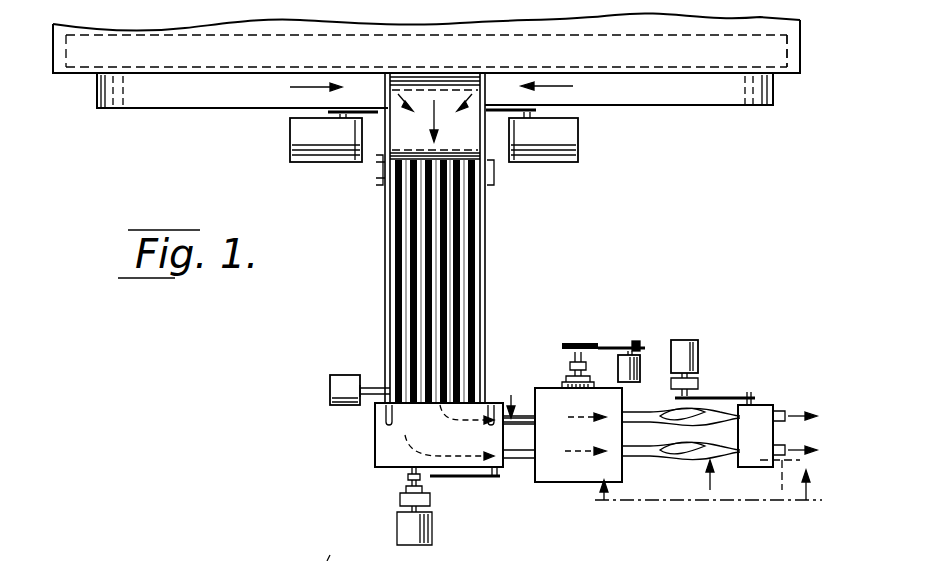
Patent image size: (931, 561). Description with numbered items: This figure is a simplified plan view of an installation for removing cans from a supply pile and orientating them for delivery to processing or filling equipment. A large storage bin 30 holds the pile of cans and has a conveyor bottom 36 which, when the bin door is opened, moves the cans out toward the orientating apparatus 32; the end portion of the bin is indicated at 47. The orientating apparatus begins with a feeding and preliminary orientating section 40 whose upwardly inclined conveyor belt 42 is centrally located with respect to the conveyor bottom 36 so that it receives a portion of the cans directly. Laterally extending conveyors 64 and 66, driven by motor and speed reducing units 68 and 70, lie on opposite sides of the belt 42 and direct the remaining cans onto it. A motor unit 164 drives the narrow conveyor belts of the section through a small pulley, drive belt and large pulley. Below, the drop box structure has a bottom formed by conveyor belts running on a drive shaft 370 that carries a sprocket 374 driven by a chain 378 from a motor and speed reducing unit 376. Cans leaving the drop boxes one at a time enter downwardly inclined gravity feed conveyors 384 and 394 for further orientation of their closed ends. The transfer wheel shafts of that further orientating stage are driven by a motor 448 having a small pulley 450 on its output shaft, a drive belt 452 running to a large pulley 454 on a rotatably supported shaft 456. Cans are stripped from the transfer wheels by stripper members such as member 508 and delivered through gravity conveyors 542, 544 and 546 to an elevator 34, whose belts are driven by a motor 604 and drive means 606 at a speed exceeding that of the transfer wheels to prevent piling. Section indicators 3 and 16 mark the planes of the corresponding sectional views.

The storage bin 30 is at (78, 80).
The platen end portion 47 is at (766, 22).
The conveyor bottom 36 is at (270, 50).
The laterally extending conveyor 64 is at (186, 98).
The laterally extending conveyor 66 is at (677, 96).
The motor and speed reducing unit 68 is at (304, 147).
The motor and speed reducing unit 70 is at (550, 150).
The upwardly inclined conveyor belt 42 is at (470, 135).
The feeding and preliminary orientating section 40 is at (380, 283).
The motor unit 164 is at (332, 382).
The orientating apparatus 32 is at (360, 432).
The drive shaft 370 is at (519, 478).
The sprocket 374 is at (484, 478).
The chain 378 is at (408, 477).
The motor and speed reducing unit 376 is at (398, 525).
The gravity feed conveyor 384 is at (520, 462).
The gravity feed conveyor 394 is at (511, 395).
The gravity conveyor 542 is at (636, 467).
The gravity conveyor 546 is at (648, 422).
The gravity conveyor 544 is at (720, 422).
The elevator 34 is at (772, 403).
The stripper member 508 is at (735, 458).
The large pulley 454 is at (575, 344).
The drive belt 452 is at (608, 346).
The small pulley 450 is at (640, 346).
The shaft 456 is at (568, 374).
The motor 448 is at (641, 368).
The motor 604 is at (688, 356).
The drive means 606 is at (736, 396).
The section line 3- 3 is at (708, 503).
The section line 16- 16 is at (748, 480).